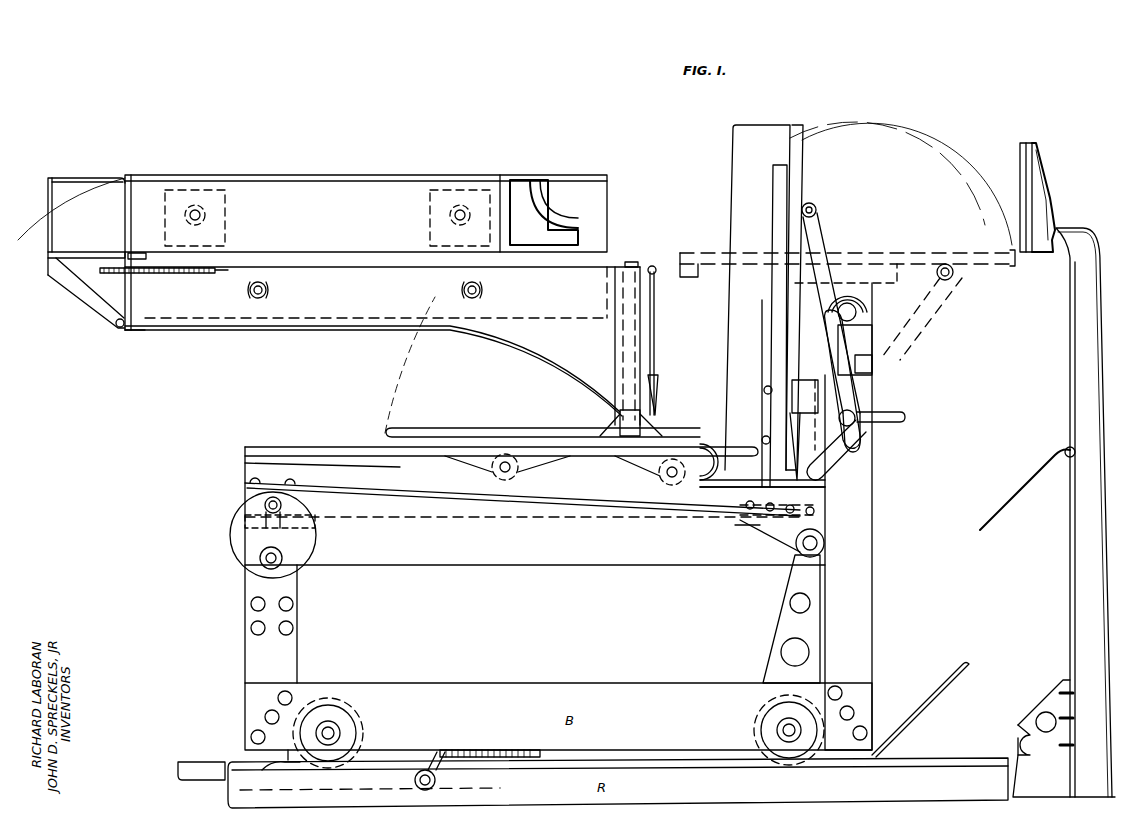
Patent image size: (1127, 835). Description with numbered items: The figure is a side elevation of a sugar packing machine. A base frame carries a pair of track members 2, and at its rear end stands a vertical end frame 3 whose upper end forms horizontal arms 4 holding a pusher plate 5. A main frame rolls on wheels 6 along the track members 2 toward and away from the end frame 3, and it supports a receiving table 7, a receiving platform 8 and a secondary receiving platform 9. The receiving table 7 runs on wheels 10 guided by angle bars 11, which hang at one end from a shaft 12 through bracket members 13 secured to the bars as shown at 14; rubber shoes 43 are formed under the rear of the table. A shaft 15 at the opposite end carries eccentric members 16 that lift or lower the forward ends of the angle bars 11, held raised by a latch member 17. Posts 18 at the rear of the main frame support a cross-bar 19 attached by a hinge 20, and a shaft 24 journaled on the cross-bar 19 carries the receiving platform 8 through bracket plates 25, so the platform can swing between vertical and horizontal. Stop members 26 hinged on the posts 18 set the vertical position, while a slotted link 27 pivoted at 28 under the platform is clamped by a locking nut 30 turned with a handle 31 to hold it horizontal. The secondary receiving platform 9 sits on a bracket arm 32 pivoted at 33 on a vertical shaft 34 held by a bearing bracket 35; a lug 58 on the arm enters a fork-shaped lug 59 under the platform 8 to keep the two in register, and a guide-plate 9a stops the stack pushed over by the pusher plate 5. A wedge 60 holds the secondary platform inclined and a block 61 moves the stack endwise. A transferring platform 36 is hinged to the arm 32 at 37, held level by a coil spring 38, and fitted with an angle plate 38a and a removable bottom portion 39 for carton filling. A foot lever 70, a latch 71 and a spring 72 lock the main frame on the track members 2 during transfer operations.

The track members 2 is at (618, 783).
The vertical end frame 3 is at (1047, 512).
The horizontal arms 4 is at (1055, 218).
The pusher plate 5 is at (1050, 218).
The wheels 6 is at (334, 720).
The receiving table 7 is at (447, 431).
The receiving platform 8 is at (770, 357).
The secondary receiving platform 9 is at (353, 251).
The guide-plate 9a is at (368, 208).
The wheels 10 is at (505, 476).
The angle bars 11 is at (535, 514).
The shaft 12 is at (795, 545).
The bracket members 13 is at (780, 530).
The securing point of bracket members to angle bars 14 is at (766, 512).
The shaft 15 is at (259, 558).
The eccentric members 16 is at (236, 541).
The latch member 17 is at (248, 522).
The posts 18 is at (809, 609).
The cross-bar 19 is at (865, 343).
The hinge 20 is at (862, 360).
The shaft 24 is at (857, 313).
The bracket plates 25 is at (862, 300).
The stop members 26 is at (805, 415).
The slotted link 27 is at (822, 232).
The pivot of slotted link 28 is at (818, 210).
The locking nut 30 is at (857, 424).
The handle 31 is at (906, 417).
The bracket arm 32 is at (382, 292).
The pivot of bracket arm 33 is at (618, 303).
The vertical shaft 34 is at (630, 261).
The bearing bracket 35 is at (648, 418).
The transferring platform 36 is at (86, 263).
The hinge 37 is at (116, 322).
The coil spring 38 is at (102, 272).
The angle plate 38a is at (87, 201).
The removable bottom portion 39 is at (83, 250).
The rubber shoes 43 is at (718, 468).
The lug 58 is at (138, 252).
The fork-shaped lug 59 is at (795, 437).
The wedge 60 is at (657, 392).
The block 61 is at (544, 212).
The foot lever 70 is at (198, 765).
The latch 71 is at (265, 762).
The spring 72 is at (461, 750).